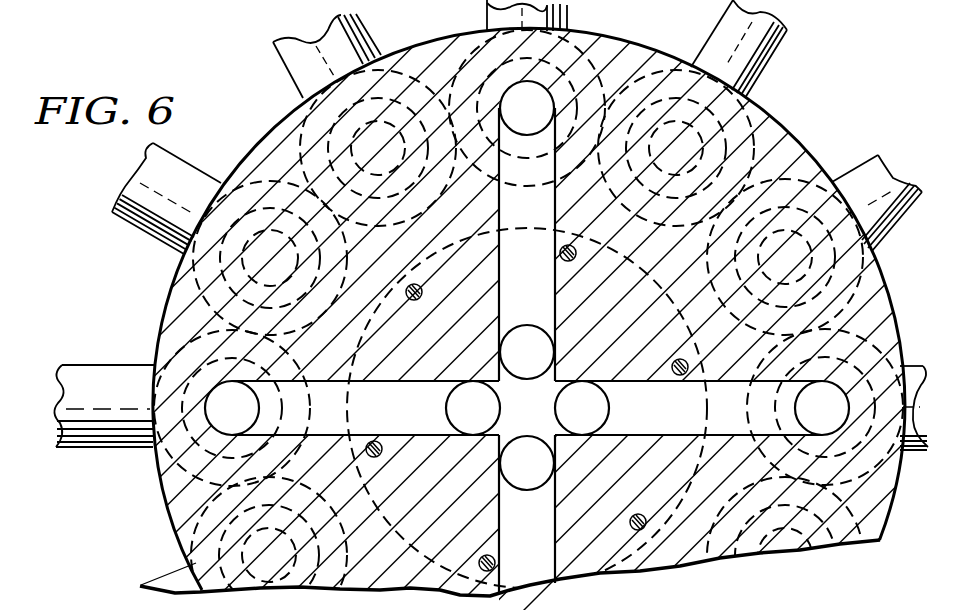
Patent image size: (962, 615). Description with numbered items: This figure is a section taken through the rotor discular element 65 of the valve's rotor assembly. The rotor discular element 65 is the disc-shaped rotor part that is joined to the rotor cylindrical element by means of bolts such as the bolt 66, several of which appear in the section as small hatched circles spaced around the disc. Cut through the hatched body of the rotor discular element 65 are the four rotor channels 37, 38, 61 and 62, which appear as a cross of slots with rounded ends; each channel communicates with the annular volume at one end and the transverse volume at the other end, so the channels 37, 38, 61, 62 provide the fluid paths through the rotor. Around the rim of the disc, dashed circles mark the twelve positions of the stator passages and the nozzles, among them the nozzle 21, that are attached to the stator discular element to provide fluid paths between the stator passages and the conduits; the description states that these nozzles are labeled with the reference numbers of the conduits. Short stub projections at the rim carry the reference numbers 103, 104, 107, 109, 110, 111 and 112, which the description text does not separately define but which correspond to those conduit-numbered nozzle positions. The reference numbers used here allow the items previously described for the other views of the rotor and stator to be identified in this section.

The nozzle 21 is at (567, 12).
The rotor channel 37 is at (543, 213).
The rotor channel 38 is at (543, 517).
The rotor channel 61 is at (338, 407).
The rotor channel 62 is at (741, 407).
The rotor discular element 65 is at (781, 124).
The bolt 66 is at (565, 262).
The radial arm 103 is at (880, 203).
The radial arm 104 is at (918, 408).
The radial arm 107 is at (391, 7).
The radial arm 109 is at (156, 571).
The radial arm 110 is at (79, 406).
The radial arm 111 is at (153, 198).
The radial arm 112 is at (327, 53).